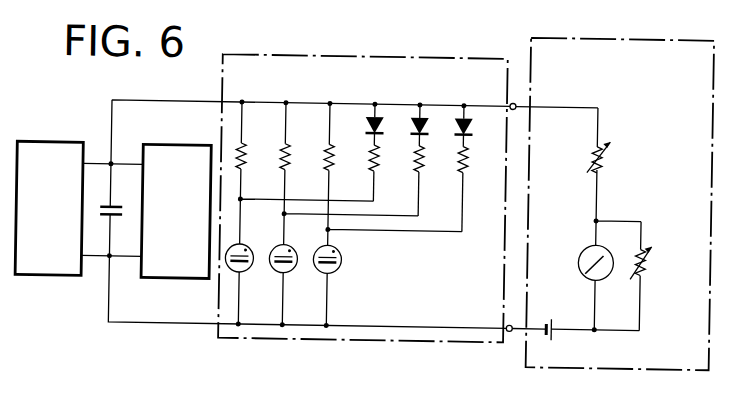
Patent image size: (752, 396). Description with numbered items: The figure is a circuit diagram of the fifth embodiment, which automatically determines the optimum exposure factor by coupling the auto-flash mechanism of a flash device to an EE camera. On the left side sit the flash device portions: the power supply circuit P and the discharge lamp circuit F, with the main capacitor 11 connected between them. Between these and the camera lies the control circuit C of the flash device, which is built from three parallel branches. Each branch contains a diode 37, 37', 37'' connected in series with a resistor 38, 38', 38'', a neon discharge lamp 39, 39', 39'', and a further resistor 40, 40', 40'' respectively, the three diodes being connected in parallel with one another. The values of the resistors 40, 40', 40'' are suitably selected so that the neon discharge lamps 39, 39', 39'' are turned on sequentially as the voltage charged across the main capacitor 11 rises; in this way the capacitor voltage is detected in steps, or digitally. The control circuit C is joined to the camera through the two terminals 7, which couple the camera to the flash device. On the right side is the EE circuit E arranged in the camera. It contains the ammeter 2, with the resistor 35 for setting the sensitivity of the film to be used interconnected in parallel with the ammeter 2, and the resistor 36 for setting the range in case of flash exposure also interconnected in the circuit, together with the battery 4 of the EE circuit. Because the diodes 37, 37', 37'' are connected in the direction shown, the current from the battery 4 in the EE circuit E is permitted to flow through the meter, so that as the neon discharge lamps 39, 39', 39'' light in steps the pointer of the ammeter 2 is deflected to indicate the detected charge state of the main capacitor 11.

The power supply circuit P is at (51, 144).
The discharge lamp circuit F is at (172, 145).
The control circuit C is at (424, 54).
The EE circuit E is at (532, 38).
The main capacitor 11 is at (117, 206).
The terminals 7 is at (514, 98).
The battery 4 is at (549, 316).
The ammeter 2 is at (580, 250).
The resistor for setting the sensitivity of the film 35 is at (652, 260).
The resistor for setting the range 36 is at (609, 157).
The diode 37 is at (385, 109).
The diode 37' is at (436, 110).
The diode 37'' is at (485, 110).
The resistor 38 is at (390, 174).
The resistor 38' is at (438, 181).
The resistor 38'' is at (487, 190).
The neon discharge lamp 39 is at (250, 239).
The neon discharge lamp 39' is at (297, 280).
The neon discharge lamp 39'' is at (350, 280).
The resistor 40 is at (259, 147).
The resistor 40' is at (307, 147).
The resistor 40'' is at (354, 172).